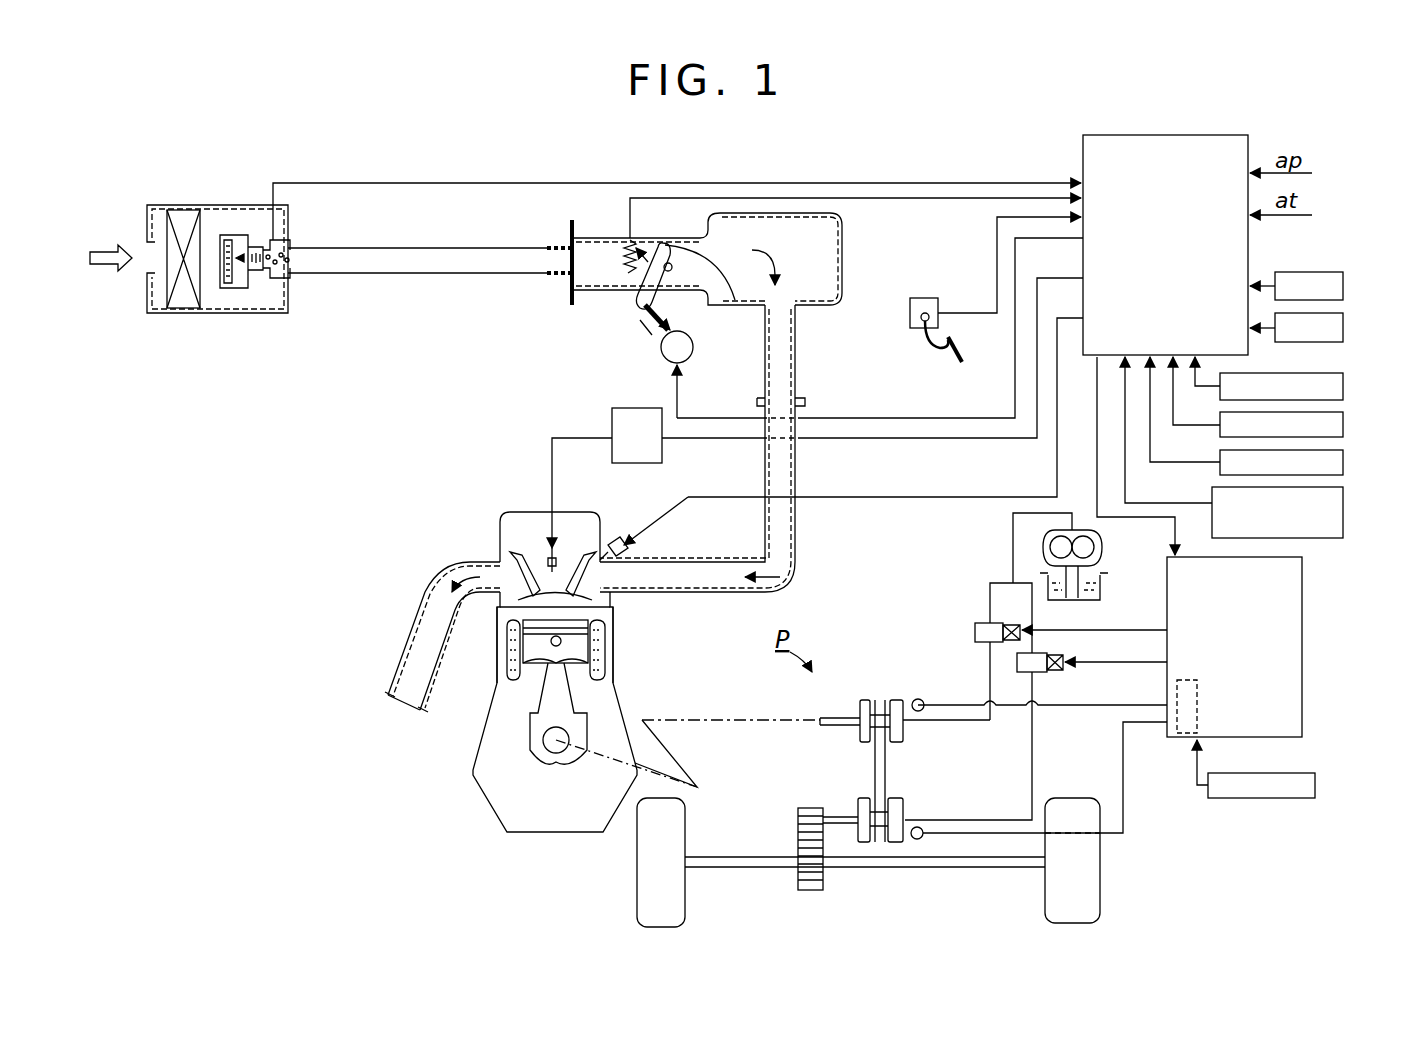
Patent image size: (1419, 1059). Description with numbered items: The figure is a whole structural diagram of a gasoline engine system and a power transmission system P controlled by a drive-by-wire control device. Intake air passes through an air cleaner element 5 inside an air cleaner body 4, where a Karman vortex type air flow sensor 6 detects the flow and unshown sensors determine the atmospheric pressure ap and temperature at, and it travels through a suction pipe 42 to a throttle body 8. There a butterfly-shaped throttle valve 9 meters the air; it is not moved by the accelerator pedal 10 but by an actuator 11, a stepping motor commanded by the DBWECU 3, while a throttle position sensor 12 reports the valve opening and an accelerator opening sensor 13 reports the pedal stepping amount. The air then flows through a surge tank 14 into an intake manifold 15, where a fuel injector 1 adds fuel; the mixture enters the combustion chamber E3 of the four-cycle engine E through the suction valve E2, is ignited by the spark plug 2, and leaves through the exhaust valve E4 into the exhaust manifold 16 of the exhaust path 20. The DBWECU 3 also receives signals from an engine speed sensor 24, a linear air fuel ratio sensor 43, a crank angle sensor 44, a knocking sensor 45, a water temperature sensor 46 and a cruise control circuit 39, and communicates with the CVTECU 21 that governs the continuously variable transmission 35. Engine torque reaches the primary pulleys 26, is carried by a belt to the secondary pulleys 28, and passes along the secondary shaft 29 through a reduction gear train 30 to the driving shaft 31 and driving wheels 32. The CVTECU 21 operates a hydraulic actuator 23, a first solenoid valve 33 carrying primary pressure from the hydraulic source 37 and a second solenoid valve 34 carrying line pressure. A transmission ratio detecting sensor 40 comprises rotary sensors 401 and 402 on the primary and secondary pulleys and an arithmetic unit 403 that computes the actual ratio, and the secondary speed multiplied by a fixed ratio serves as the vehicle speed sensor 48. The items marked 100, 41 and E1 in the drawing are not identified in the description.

The fuel injector 1 is at (616, 540).
The spark plug 2 is at (550, 522).
The DBWECU 3 is at (1180, 135).
The air cleaner body 4 is at (236, 313).
The air cleaner element 5 is at (183, 300).
The air flow sensor 6 is at (292, 240).
The throttle body 8 is at (580, 291).
The throttle valve 9 is at (725, 292).
The accelerator pedal 10 is at (935, 352).
The actuator 11 is at (692, 357).
The throttle position sensor 12 is at (625, 276).
The accelerator opening sensor 13 is at (930, 298).
The surge tank 14 is at (843, 262).
The intake manifold 15 is at (800, 550).
The exhaust manifold 16 is at (437, 598).
The exhaust path 20 is at (420, 652).
The CVTECU 21 is at (1303, 640).
The hydraulic actuator 23 is at (963, 615).
The engine speed sensor 24 is at (1343, 287).
The primary pulleys 26 is at (903, 740).
The secondary pulleys 28 is at (903, 812).
The secondary shaft 29 is at (842, 816).
The reduction gear train 30 is at (795, 842).
The driving shaft 31 is at (955, 868).
The driving wheels 32 is at (680, 897).
The first solenoid valve 33 is at (985, 642).
The second solenoid valve 34 is at (1040, 670).
The continuously variable transmission 35 is at (894, 736).
The hydraulic source 37 is at (1103, 547).
The cruise control circuit 39 is at (1343, 517).
The transmission ratio detecting sensor 40 is at (910, 842).
The ignition unit 41 is at (612, 420).
The suction pipe 42 is at (455, 272).
The linear air fuel ratio sensor 43 is at (1343, 329).
The crank angle sensor 44 is at (1343, 387).
The knocking sensor 45 is at (1343, 425).
The water temperature sensor 46 is at (1343, 463).
The vehicle speed sensor 48 is at (1310, 773).
The throttle valve device 100 is at (818, 275).
The rotary sensor 401 is at (918, 698).
The rotary sensor 402 is at (915, 845).
The arithmetic unit 403 is at (1185, 738).
The engine E is at (767, 575).
The connecting rod E1 is at (578, 648).
The suction valve E2 is at (586, 540).
The combustion chamber E3 is at (560, 598).
The exhaust valve E4 is at (518, 545).